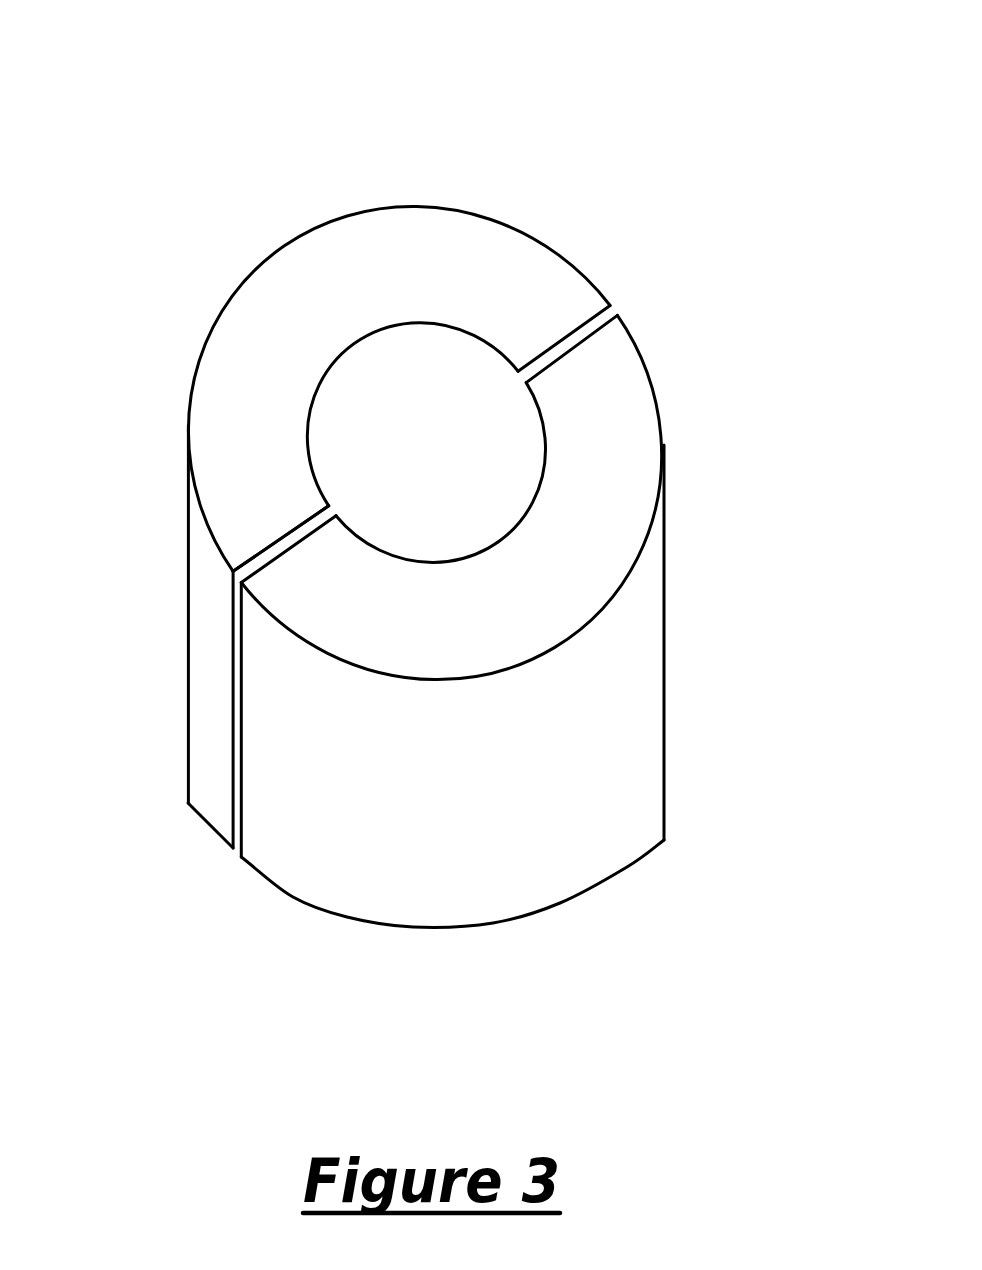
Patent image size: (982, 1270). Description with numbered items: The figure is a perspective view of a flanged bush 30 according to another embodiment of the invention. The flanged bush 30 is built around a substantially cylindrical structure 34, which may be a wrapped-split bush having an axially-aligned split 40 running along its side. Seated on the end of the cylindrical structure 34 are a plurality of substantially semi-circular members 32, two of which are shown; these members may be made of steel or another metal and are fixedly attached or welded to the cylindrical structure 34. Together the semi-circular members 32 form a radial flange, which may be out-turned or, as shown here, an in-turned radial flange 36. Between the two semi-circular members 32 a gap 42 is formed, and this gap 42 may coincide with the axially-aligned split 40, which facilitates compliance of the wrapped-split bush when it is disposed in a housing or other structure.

The flanged bush 30 is at (429, 480).
The substantially semi-circular members 32 is at (567, 429).
The substantially cylindrical structure 34 is at (618, 720).
The in-turned radial flange 36 is at (488, 258).
The axially-aligned split 40 is at (203, 669).
The gap 42 is at (298, 563).